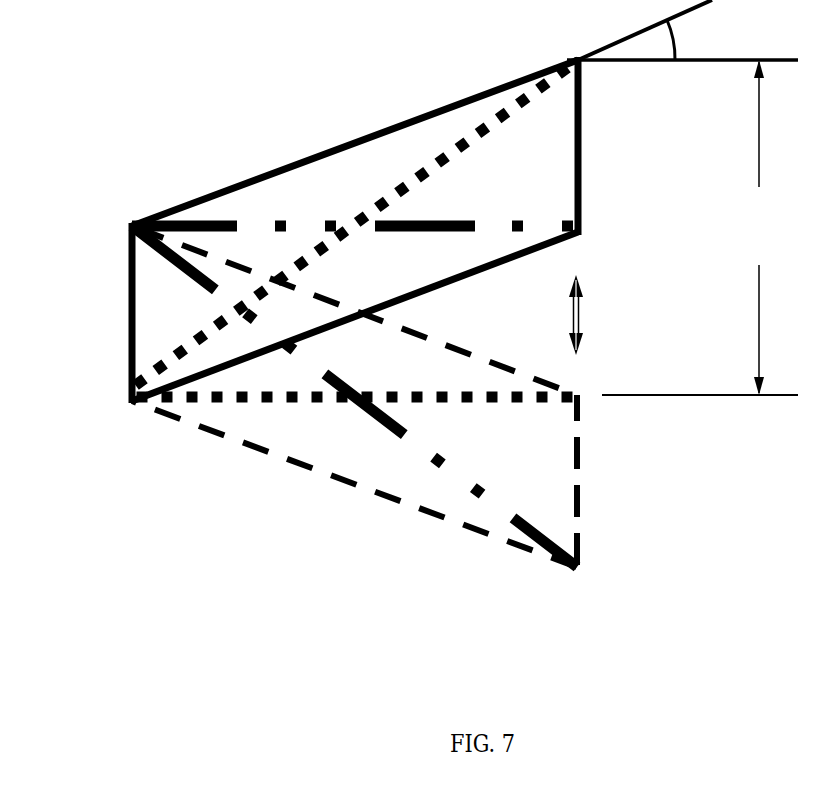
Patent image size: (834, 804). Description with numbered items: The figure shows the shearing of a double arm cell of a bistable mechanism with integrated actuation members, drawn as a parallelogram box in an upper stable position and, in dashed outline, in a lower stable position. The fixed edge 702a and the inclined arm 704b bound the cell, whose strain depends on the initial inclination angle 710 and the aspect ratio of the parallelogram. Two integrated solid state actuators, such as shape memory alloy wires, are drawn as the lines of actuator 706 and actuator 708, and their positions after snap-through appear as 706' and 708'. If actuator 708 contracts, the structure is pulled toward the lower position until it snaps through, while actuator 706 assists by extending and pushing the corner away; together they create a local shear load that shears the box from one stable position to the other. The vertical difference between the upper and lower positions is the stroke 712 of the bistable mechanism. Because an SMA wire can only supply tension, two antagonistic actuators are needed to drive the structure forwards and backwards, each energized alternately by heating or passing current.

The hinge edge / pivot axis of flap 702a is at (85, 313).
The flap / sheet member 704b is at (355, 312).
The actuator 706 is at (402, 168).
The lower position of actuator 706 706' is at (411, 396).
The actuator 708 is at (357, 206).
The lower position of actuator 708 708' is at (359, 480).
The angle theta of flap 710 is at (682, 30).
The stroke 712 is at (691, 227).